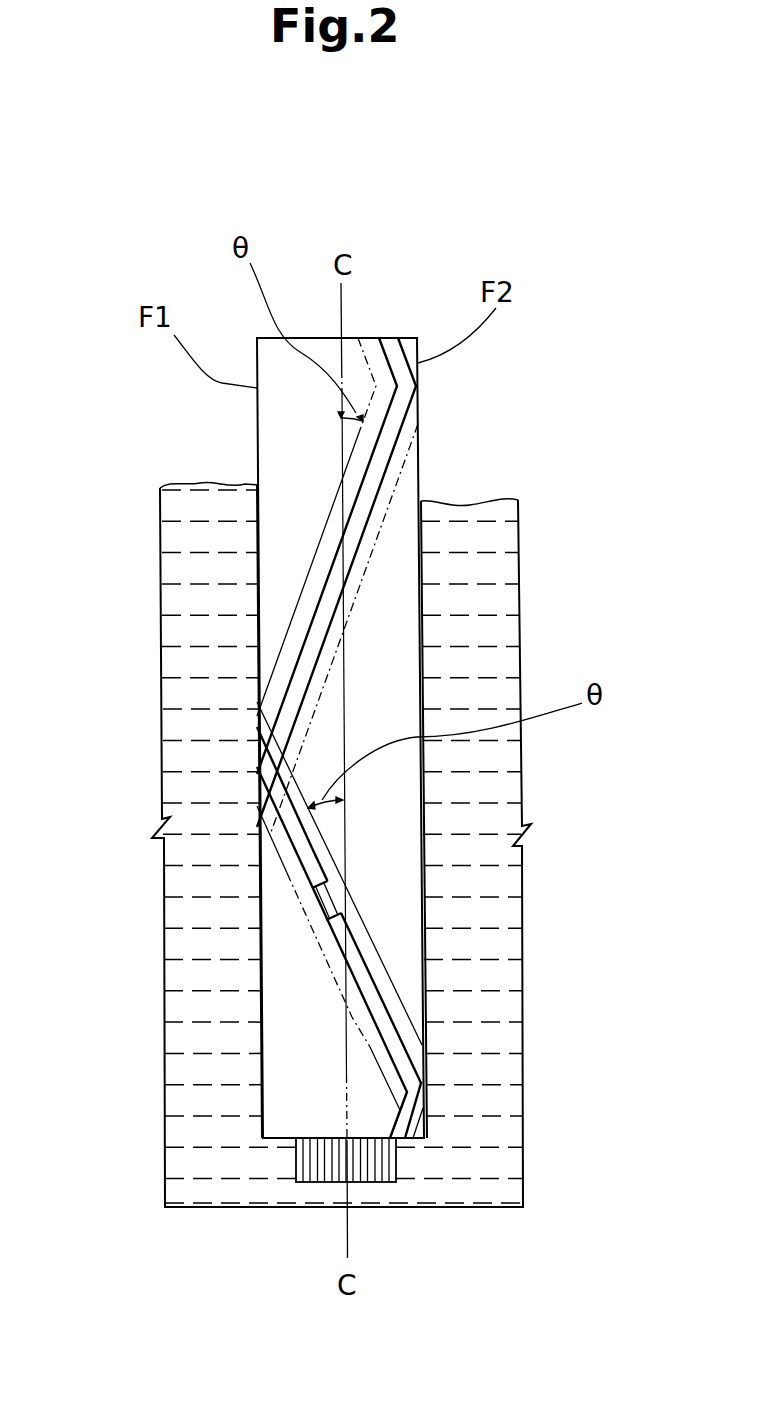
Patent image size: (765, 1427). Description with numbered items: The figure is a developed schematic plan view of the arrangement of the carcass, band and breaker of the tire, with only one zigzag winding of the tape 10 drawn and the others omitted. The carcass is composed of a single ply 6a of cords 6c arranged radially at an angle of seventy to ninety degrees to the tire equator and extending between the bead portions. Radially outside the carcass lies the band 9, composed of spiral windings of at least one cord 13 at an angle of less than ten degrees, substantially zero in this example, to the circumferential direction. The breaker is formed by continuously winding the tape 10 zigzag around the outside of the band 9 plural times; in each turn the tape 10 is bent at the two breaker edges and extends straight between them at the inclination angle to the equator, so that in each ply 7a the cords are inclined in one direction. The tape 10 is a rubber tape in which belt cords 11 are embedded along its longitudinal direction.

The ply 6a is at (162, 688).
The cords 6c is at (205, 738).
The ply 7a is at (272, 1083).
The band 9 is at (317, 1183).
The tape 10 is at (382, 450).
The belt cords 11 is at (320, 903).
The cord 13 is at (302, 1160).